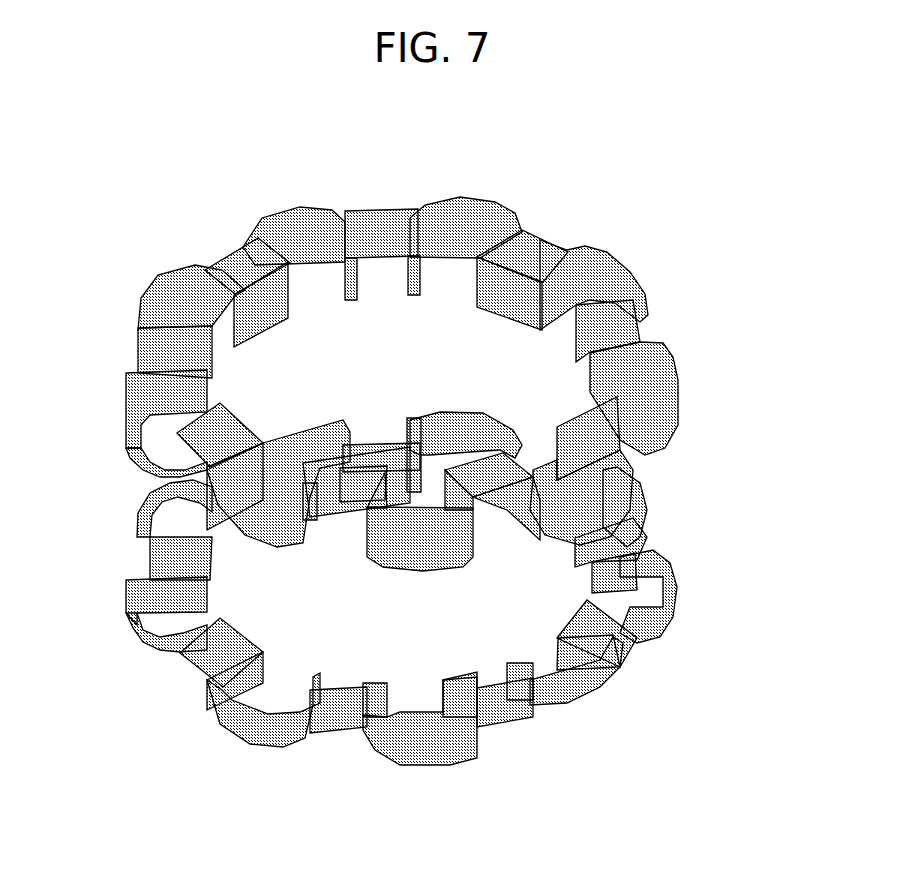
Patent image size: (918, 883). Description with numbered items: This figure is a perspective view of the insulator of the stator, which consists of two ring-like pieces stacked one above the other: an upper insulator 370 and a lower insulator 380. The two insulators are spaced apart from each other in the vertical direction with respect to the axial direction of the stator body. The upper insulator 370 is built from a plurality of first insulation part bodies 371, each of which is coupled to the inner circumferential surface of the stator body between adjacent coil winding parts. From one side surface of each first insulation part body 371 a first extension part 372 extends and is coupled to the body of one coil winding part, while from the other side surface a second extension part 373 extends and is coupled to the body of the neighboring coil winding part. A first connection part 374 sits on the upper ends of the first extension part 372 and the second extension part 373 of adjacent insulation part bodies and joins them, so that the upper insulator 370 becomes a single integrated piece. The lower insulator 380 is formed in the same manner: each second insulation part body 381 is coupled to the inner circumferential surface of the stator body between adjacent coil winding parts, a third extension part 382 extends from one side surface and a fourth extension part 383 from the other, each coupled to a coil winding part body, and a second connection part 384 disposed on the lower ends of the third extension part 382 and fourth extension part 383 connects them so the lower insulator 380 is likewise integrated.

The upper insulator 370 is at (577, 215).
The first insulation part body 371 is at (165, 300).
The first extension part 372 is at (218, 300).
The second extension part 373 is at (295, 297).
The first connection part 374 is at (262, 265).
The lower insulator 380 is at (690, 543).
The second insulation part body 381 is at (680, 603).
The third extension part 382 is at (578, 688).
The fourth extension part 383 is at (447, 695).
The second connection part 384 is at (502, 708).